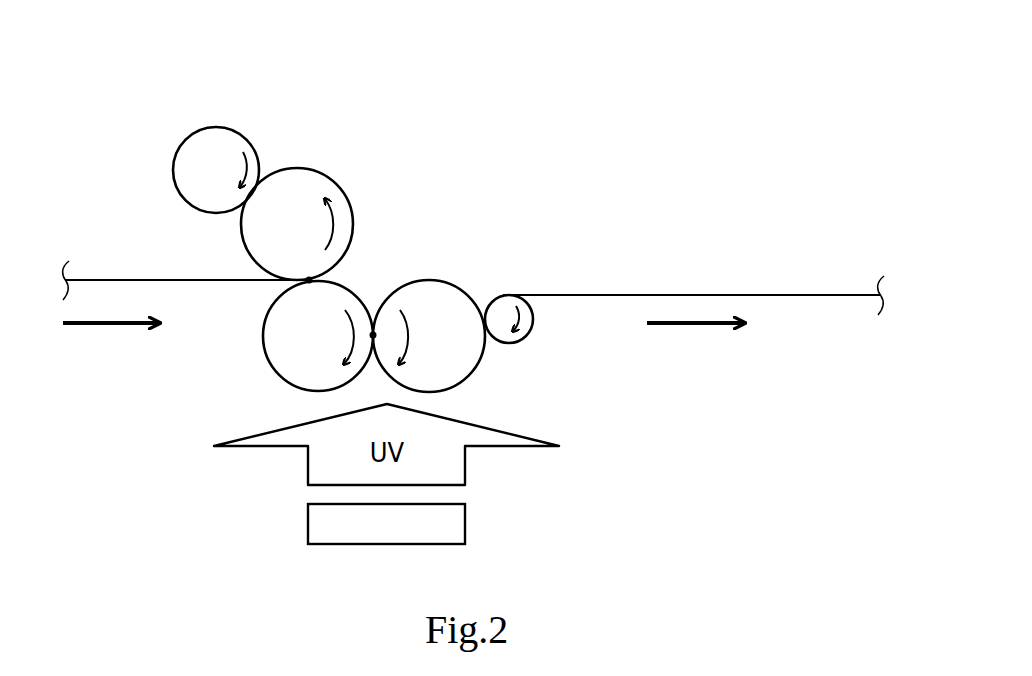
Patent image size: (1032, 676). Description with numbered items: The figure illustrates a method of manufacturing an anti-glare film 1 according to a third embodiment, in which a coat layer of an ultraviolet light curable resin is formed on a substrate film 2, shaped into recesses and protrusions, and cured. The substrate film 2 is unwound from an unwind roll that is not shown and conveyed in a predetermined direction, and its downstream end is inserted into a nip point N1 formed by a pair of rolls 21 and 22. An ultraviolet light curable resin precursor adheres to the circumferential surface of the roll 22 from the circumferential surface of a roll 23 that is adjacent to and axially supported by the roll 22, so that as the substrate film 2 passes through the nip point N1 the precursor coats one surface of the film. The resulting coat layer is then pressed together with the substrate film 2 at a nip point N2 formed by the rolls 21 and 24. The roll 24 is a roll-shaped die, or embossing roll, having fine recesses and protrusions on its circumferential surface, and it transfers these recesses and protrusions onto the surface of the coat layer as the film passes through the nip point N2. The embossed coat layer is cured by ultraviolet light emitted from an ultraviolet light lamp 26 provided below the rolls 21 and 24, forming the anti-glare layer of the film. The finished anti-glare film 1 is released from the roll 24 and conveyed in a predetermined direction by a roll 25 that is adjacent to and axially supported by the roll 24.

The anti-glare film 1 is at (832, 297).
The substrate film 2 is at (110, 280).
The roll 21 is at (280, 343).
The roll 22 is at (297, 177).
The roll 23 is at (215, 138).
The roll 24 is at (465, 360).
The roll 25 is at (530, 320).
The ultraviolet light lamp 26 is at (465, 522).
The nip point N1 is at (305, 279).
The nip point N2 is at (373, 332).